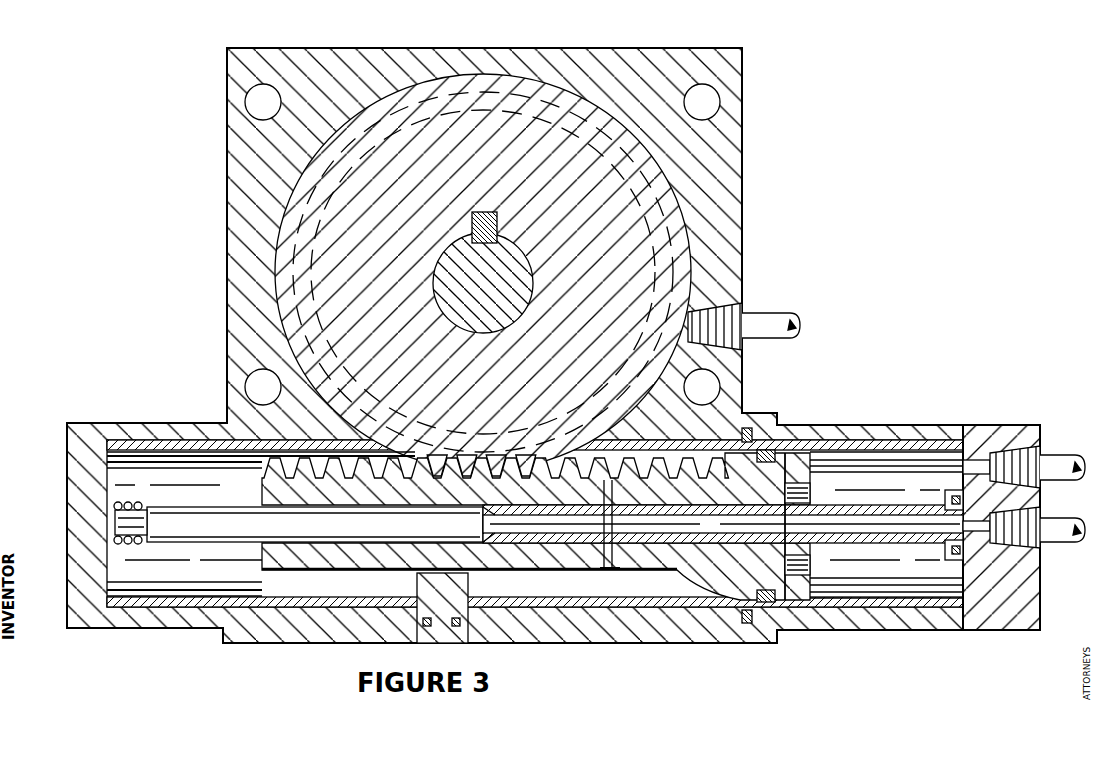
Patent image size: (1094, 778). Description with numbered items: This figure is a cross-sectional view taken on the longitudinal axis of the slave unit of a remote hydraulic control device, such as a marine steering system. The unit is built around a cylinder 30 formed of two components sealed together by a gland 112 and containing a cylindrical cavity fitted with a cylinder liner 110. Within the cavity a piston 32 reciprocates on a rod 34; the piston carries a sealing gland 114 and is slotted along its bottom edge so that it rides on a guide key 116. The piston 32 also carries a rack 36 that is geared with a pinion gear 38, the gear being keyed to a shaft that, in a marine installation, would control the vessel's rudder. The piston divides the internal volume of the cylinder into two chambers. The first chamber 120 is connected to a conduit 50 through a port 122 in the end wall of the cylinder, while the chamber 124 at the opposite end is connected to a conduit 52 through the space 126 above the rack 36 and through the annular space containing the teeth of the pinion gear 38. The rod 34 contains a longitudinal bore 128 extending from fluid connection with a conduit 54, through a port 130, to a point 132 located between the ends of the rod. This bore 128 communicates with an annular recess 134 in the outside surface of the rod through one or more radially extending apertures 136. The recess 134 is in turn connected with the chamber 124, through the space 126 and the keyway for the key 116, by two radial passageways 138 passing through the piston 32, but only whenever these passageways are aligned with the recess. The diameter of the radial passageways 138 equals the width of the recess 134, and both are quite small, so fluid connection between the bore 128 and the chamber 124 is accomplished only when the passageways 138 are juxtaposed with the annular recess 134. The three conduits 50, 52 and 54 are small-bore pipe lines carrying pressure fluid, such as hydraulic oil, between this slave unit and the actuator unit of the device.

The cylinder 30 is at (850, 425).
The piston 32 is at (795, 600).
The rod 34 is at (960, 530).
The rack 36 is at (755, 418).
The pinion gear 38 is at (640, 255).
The conduit 50 is at (1055, 452).
The conduit 52 is at (790, 318).
The conduit 54 is at (1060, 545).
The cylinder liner 110 is at (878, 440).
The gland 112 is at (775, 428).
The sealing gland 114 is at (795, 445).
The guide key 116 is at (470, 578).
The chamber 120 is at (940, 452).
The port 122 is at (985, 450).
The chamber 124 is at (120, 492).
The space 126 is at (240, 422).
The longitudinal bore 128 is at (880, 532).
The port 130 is at (975, 530).
The point 132 is at (600, 520).
The annular recess 134 is at (612, 560).
The radially extending apertures 136 is at (615, 505).
The radial passageways 138 is at (600, 500).